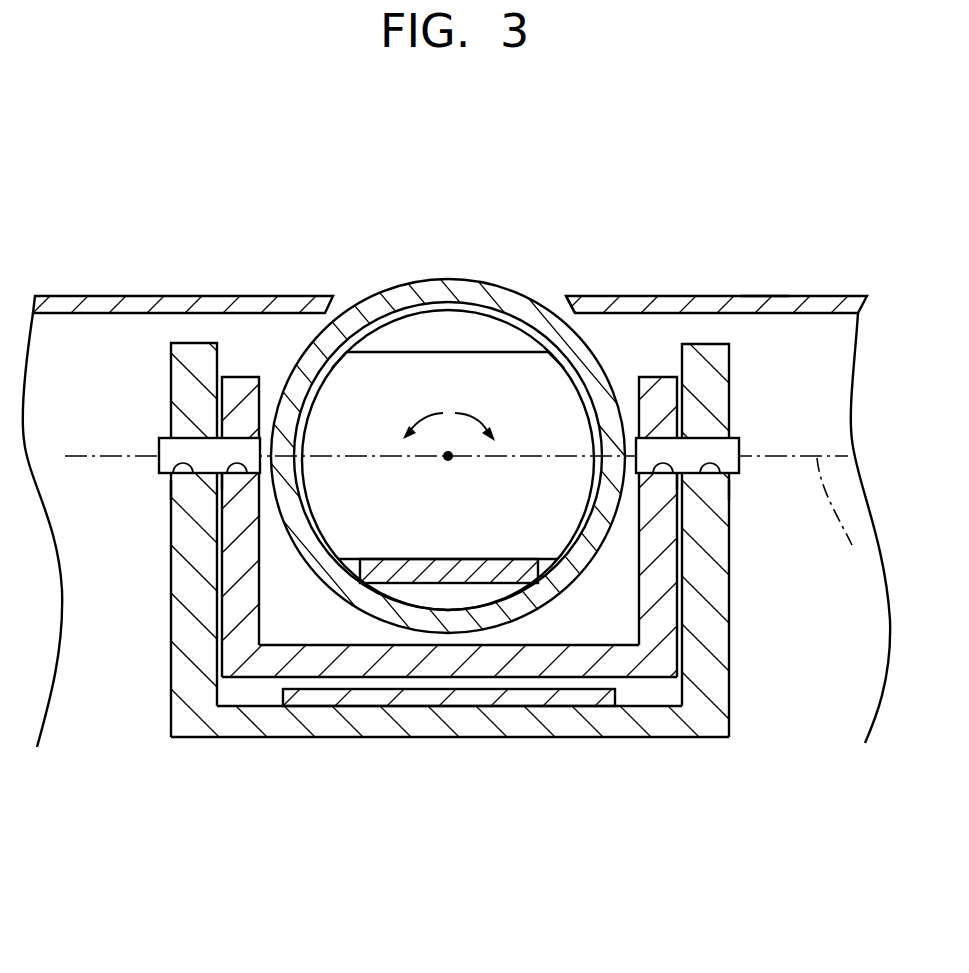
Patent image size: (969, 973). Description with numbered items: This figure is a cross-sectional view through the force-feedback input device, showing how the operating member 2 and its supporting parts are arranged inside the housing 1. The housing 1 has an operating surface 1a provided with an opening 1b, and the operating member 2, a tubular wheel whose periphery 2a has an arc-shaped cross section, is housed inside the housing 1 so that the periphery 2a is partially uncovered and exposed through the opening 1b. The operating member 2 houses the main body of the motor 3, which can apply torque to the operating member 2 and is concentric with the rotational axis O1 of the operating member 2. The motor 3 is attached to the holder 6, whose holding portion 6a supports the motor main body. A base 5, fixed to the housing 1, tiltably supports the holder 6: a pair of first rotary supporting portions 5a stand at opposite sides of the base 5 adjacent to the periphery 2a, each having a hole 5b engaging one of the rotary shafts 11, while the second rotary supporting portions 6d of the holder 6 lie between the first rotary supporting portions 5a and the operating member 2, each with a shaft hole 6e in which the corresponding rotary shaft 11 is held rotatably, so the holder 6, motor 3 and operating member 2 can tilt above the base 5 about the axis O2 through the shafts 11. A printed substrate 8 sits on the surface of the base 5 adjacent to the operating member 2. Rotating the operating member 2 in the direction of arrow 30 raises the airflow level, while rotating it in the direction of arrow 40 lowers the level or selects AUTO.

The housing 1 is at (696, 286).
The operating surface 1a is at (757, 296).
The opening 1b is at (568, 297).
The operating member 2 is at (387, 278).
The periphery 2a is at (424, 298).
The motor 3 is at (468, 340).
The base 5 is at (520, 750).
The first rotary supporting portions 5a is at (183, 362).
The hole 5b is at (173, 483).
The holder 6 is at (253, 688).
The holding portion 6a is at (428, 578).
The second rotary supporting portions 6d is at (235, 577).
The shaft hole 6e is at (228, 482).
The printed substrate 8 is at (586, 702).
The rotary shafts 11 is at (160, 442).
The arrow 30 is at (480, 413).
The arrow 40 is at (423, 414).
The rotational axis O1 is at (448, 462).
The swing axis O2 is at (841, 523).